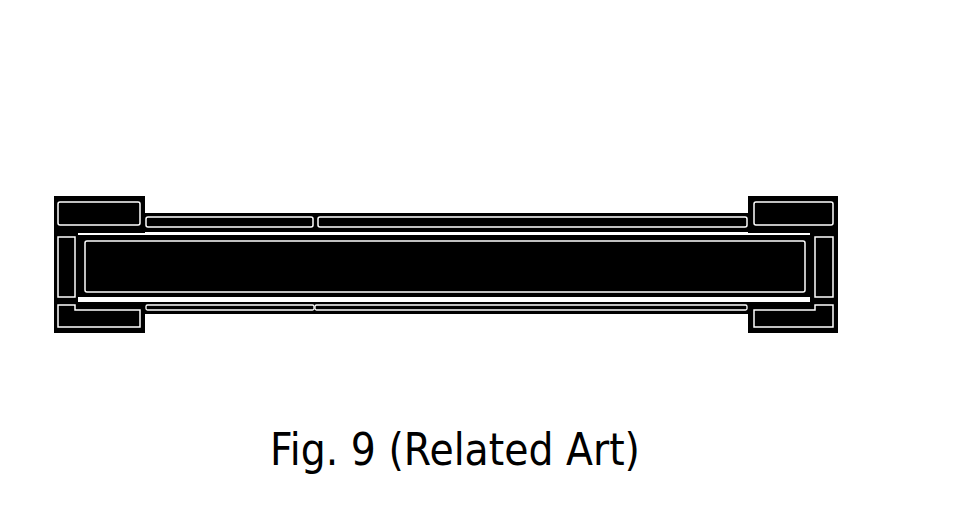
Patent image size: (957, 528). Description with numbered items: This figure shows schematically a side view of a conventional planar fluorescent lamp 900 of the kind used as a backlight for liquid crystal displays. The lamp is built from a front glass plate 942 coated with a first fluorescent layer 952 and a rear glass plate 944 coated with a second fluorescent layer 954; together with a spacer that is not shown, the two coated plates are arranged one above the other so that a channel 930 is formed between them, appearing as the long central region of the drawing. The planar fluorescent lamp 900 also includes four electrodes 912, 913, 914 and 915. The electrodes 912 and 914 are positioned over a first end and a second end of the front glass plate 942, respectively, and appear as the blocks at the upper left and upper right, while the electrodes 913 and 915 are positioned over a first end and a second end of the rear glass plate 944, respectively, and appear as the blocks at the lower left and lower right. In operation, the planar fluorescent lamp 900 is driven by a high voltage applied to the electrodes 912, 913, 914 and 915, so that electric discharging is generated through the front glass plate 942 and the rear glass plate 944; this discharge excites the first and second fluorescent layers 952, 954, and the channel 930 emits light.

The planar fluorescent lamp 900 is at (446, 220).
The electrode 912 is at (97, 203).
The electrode 913 is at (93, 306).
The electrode 914 is at (776, 203).
The electrode 915 is at (782, 316).
The channel 930 is at (392, 258).
The front glass plate 942 is at (216, 213).
The rear glass plate 944 is at (213, 305).
The first fluorescent layer 952 is at (313, 233).
The second fluorescent layer 954 is at (312, 297).